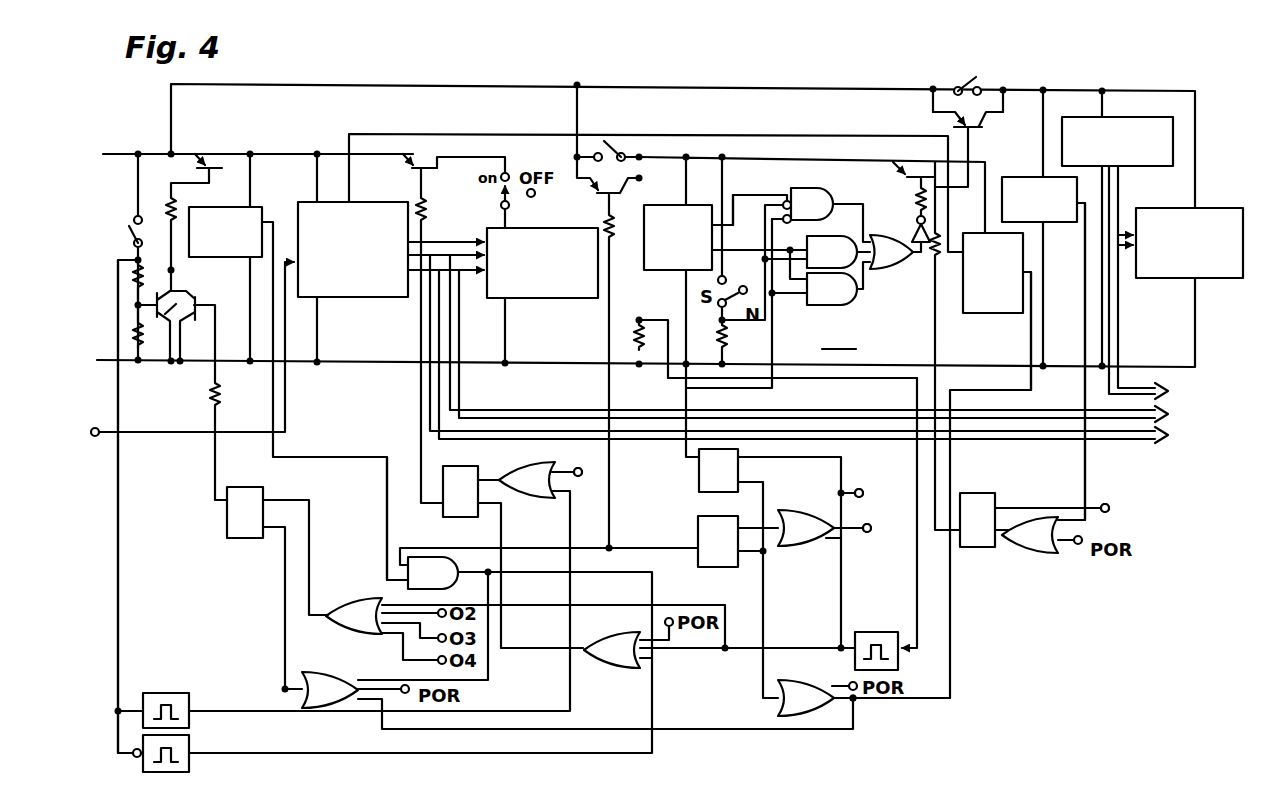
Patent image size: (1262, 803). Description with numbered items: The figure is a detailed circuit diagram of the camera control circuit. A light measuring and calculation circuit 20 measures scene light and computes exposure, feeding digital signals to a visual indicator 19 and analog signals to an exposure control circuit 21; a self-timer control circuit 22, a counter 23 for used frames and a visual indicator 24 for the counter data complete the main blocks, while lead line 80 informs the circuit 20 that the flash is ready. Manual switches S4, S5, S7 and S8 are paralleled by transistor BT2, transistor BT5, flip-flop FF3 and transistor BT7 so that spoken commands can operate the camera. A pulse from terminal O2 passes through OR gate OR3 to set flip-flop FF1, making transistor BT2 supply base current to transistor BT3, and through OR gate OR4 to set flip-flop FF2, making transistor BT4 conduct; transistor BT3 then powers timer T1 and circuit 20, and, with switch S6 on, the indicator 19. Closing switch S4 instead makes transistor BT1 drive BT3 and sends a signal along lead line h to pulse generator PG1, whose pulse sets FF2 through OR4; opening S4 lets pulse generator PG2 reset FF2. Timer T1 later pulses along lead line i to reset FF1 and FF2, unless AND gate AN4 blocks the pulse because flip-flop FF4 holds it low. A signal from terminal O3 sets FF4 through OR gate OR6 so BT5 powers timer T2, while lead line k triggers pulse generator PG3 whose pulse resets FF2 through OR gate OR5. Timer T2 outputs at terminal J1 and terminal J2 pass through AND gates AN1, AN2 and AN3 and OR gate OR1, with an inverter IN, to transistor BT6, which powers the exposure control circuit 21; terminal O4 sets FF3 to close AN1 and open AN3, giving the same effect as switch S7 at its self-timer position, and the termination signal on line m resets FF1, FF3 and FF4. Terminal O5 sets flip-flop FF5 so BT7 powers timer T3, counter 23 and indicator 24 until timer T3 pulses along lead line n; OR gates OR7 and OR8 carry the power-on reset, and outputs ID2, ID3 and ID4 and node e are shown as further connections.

The transistor BT1 is at (158, 312).
The transistor BT2 is at (178, 291).
The transistor BT3 is at (210, 166).
The transistor BT4 is at (422, 167).
The transistor BT5 is at (603, 194).
The transistor BT6 is at (921, 175).
The transistor BT7 is at (976, 127).
The switch S4 is at (131, 233).
The switch S5 is at (607, 143).
The switch S6 is at (502, 203).
The switch S7 is at (732, 297).
The manual switch S8 is at (965, 79).
The timer T1 is at (225, 232).
The timer T2 is at (678, 237).
The timer T3 is at (1039, 200).
The visual indicator 19 is at (542, 263).
The light measuring and calculation circuit 20 is at (353, 249).
The exposure control circuit 21 is at (993, 273).
The self-timer control circuit 22 is at (856, 349).
The counter 23 is at (1117, 141).
The visual indicator 24 is at (1189, 243).
The lead line 80 is at (89, 451).
The terminal of timer T2 J1 is at (734, 201).
The terminal of timer T2 J2 is at (751, 244).
The AND gate AN1 is at (808, 205).
The AND gate AN2 is at (832, 252).
The AND gate AN3 is at (832, 289).
The AND gate AN4 is at (433, 573).
The OR gate OR1 is at (891, 252).
The OR gate OR3 is at (342, 653).
The OR gate OR4 is at (527, 480).
The OR gate OR5 is at (612, 650).
The OR gate OR6 is at (806, 528).
The OR gate OR7 is at (806, 698).
The OR gate OR8 is at (1030, 535).
The inverter IN is at (916, 224).
The flip-flop FF1 is at (225, 540).
The flip-flop FF2 is at (443, 468).
The flip-flop FF3 is at (699, 474).
The flip-flop FF4 is at (701, 567).
The flip-flop FF5 is at (972, 547).
The pulse generator PG1 is at (173, 693).
The pulse generator PG2 is at (189, 742).
The pulse generator PG3 is at (878, 632).
The output ID2 is at (1184, 440).
The output ID3 is at (1184, 418).
The output ID4 is at (1184, 393).
The terminal of the input-and-output port O2 is at (584, 462).
The terminal of the input-and-output port O3 is at (880, 538).
The terminal of the input-and-output port O4 is at (876, 492).
The terminal of the input-and-output port O5 is at (1123, 509).
The lead line h is at (118, 554).
The lead line i is at (387, 492).
The lead line k is at (880, 378).
The line m is at (1031, 380).
The lead line n is at (1085, 299).
The node e is at (862, 713).